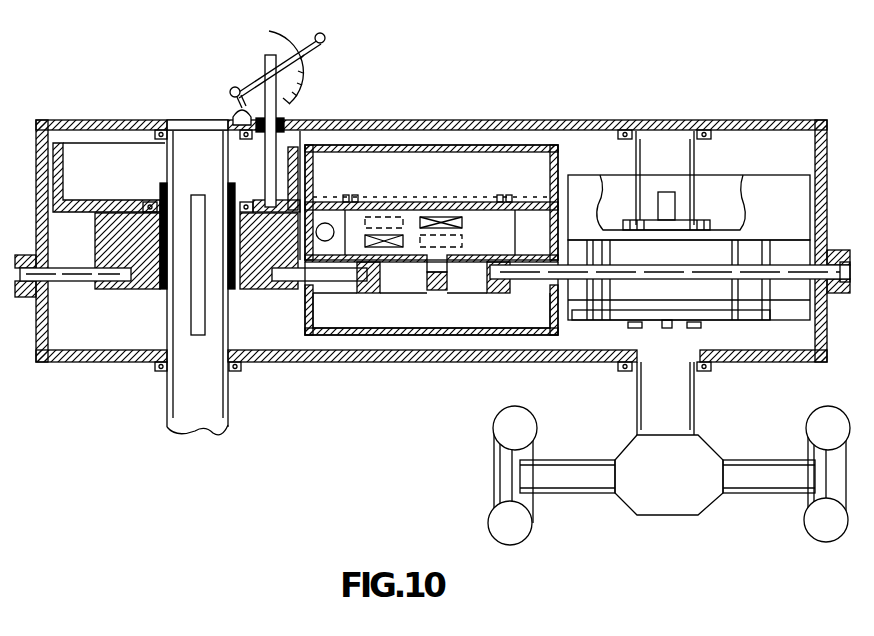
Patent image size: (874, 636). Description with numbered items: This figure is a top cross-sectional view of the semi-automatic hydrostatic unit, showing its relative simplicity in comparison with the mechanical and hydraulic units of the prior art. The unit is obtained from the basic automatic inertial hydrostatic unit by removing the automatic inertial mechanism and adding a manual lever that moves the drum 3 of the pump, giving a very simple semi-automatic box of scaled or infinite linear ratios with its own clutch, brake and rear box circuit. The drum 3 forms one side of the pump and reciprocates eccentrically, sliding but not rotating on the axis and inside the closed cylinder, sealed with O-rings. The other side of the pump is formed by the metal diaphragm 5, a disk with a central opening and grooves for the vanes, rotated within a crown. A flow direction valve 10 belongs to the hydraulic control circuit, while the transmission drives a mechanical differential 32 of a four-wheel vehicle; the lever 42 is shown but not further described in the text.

The drum 3 is at (70, 150).
The metal diaphragm 5 is at (80, 282).
The flow direction valve 10 is at (327, 39).
The lever 42 is at (262, 58).
The mechanical differential 32 is at (690, 494).